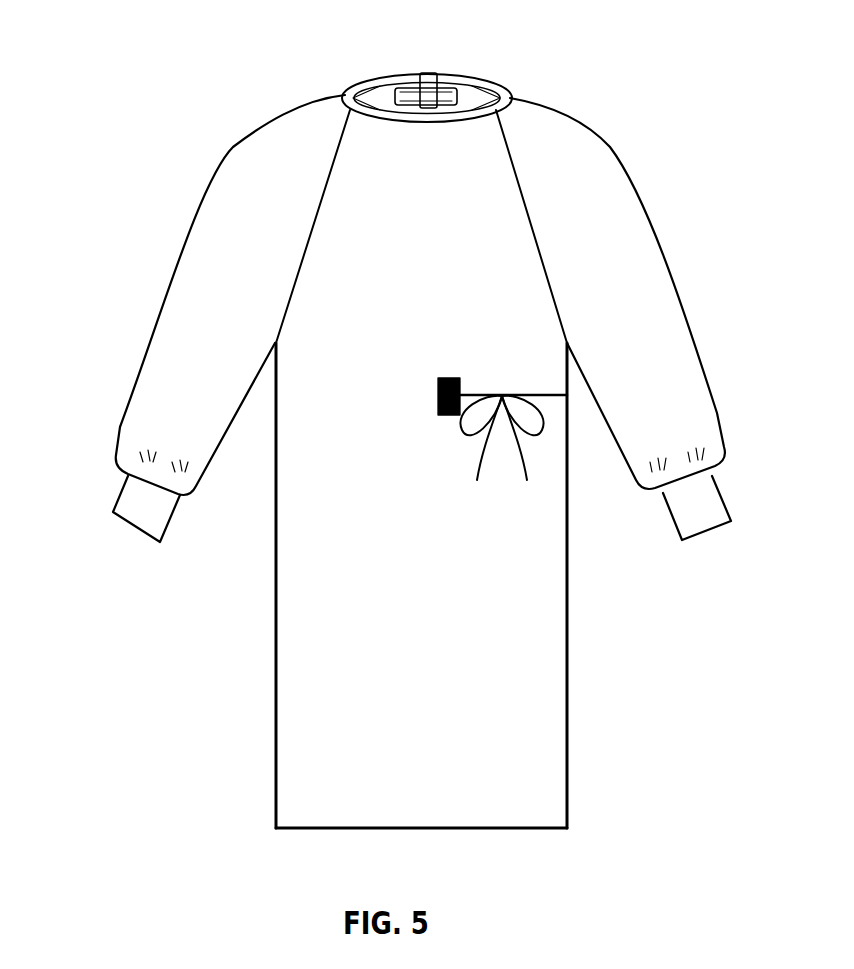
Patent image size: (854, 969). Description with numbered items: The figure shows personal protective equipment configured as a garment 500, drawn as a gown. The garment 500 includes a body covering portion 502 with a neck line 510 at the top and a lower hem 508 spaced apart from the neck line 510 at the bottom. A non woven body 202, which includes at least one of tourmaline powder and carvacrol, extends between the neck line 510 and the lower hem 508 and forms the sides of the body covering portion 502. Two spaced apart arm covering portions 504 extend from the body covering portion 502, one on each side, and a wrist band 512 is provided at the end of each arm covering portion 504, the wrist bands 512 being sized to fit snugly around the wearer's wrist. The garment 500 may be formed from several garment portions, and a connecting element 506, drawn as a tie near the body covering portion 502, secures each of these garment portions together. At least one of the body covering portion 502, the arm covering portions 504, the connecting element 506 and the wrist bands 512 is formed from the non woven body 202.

The garment 500 is at (528, 84).
The body covering portion 502 is at (290, 612).
The non woven body 202 is at (297, 475).
The lower hem 508 is at (325, 829).
The arm covering portion 504 is at (225, 212).
The connecting element 506 is at (508, 390).
The neck line 510 is at (350, 93).
The wrist band 512 is at (130, 520).